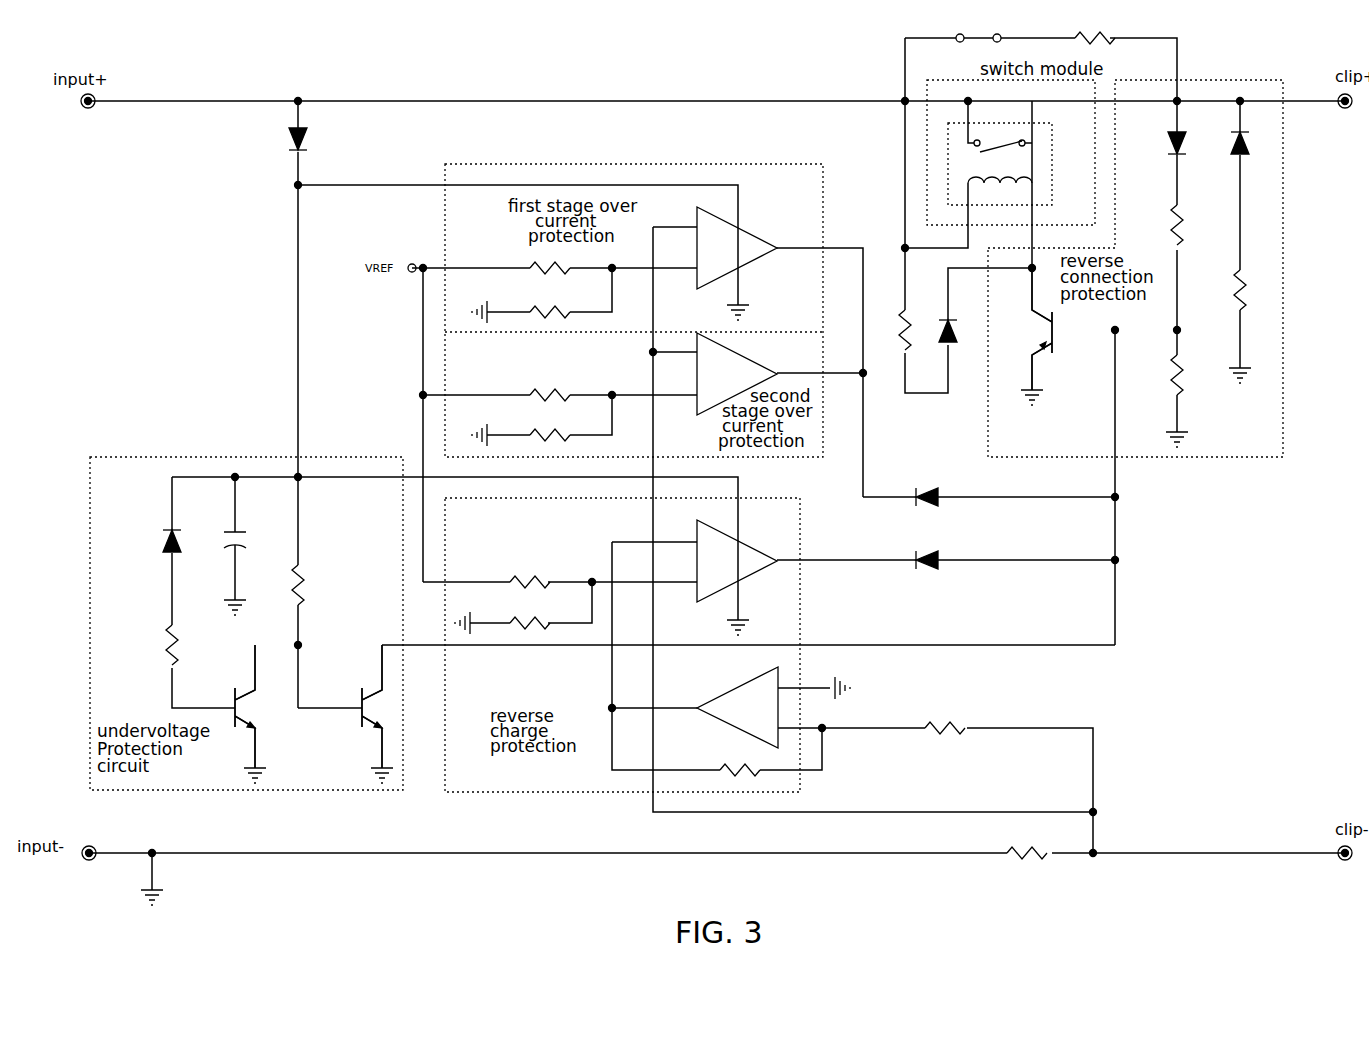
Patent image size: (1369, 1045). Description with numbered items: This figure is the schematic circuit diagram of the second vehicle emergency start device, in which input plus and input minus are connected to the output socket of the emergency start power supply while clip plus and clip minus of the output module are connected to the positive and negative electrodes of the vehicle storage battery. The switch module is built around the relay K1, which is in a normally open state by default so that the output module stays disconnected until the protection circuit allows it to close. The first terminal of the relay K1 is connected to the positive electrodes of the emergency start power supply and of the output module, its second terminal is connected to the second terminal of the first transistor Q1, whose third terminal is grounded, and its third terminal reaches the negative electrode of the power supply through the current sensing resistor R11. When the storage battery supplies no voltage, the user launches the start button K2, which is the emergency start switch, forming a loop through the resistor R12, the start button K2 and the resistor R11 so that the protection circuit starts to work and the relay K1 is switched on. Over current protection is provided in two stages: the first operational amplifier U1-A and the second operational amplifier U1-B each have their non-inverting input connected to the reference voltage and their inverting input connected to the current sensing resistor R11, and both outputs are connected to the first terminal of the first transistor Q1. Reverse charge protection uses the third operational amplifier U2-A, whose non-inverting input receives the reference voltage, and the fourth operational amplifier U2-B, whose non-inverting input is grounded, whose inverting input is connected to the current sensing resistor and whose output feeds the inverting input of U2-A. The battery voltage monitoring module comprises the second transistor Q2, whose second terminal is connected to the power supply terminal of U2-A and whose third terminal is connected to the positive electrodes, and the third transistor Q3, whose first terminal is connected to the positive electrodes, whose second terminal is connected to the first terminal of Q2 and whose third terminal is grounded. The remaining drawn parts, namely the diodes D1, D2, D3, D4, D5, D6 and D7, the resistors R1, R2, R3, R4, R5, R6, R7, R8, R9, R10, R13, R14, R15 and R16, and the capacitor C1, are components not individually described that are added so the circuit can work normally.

The diode D2 is at (307, 136).
The resistor R1 is at (549, 261).
The resistor R2 is at (549, 305).
The resistor R3 is at (549, 388).
The resistor R4 is at (549, 428).
The first operational amplifier U1-A is at (737, 247).
The second operational amplifier U1-B is at (737, 374).
The resistor R5 is at (529, 575).
The resistor R6 is at (529, 616).
The third operational amplifier U2-A is at (737, 558).
The fourth operational amplifier U2-B is at (737, 699).
The resistor R9 is at (739, 763).
The resistor R10 is at (944, 720).
The current sensing resistor R11 is at (1026, 862).
The diode D4 is at (921, 508).
The diode D5 is at (921, 571).
The resistor R7 is at (896, 322).
The diode D6 is at (938, 322).
The first transistor Q1 is at (1028, 329).
The relay K1 is at (1008, 164).
The start button K2 is at (978, 49).
The resistor R12 is at (1092, 46).
The diode D1 is at (1186, 144).
The resistor R8 is at (1164, 225).
The resistor R13 is at (1190, 375).
The diode D7 is at (1232, 140).
The resistor R16 is at (1252, 290).
The zener diode D3 is at (162, 530).
The capacitor C1 is at (227, 528).
The resistor R15 is at (190, 645).
The resistor R14 is at (311, 585).
The second transistor Q2 is at (256, 706).
The third transistor Q3 is at (384, 706).